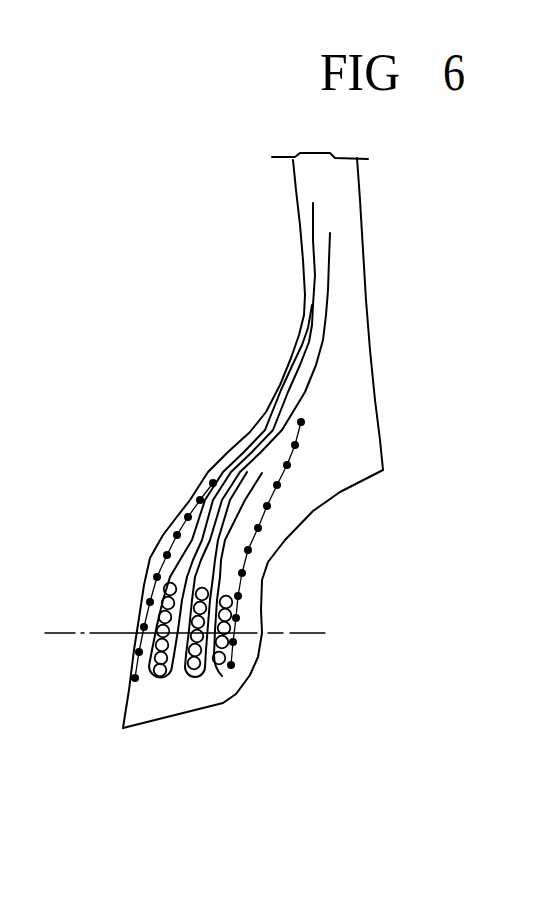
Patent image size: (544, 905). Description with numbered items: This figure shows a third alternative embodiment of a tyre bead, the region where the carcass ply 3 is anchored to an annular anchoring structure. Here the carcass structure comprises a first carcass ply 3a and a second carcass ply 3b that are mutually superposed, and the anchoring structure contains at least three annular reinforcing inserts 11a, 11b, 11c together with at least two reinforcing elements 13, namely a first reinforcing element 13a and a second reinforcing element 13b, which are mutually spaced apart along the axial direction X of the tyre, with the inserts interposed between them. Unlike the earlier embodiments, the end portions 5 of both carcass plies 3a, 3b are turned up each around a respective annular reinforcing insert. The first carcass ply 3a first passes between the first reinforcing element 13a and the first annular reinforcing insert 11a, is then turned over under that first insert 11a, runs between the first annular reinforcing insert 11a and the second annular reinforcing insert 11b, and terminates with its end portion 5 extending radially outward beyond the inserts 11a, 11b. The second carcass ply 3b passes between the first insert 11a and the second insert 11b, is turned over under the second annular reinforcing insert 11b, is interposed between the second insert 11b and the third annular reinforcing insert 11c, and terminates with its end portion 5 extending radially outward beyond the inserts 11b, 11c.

The carcass ply 3 is at (319, 218).
The first carcass ply 3a is at (313, 305).
The second carcass ply 3b is at (326, 314).
The end portion 5 is at (222, 562).
The first annular reinforcing insert 11a is at (160, 678).
The second annular reinforcing insert 11b is at (195, 679).
The third annular reinforcing insert 11c is at (222, 676).
The reinforcing elements 13 is at (190, 500).
The first reinforcing element 13a is at (167, 543).
The second reinforcing element 13b is at (246, 585).
The axial direction X is at (68, 632).